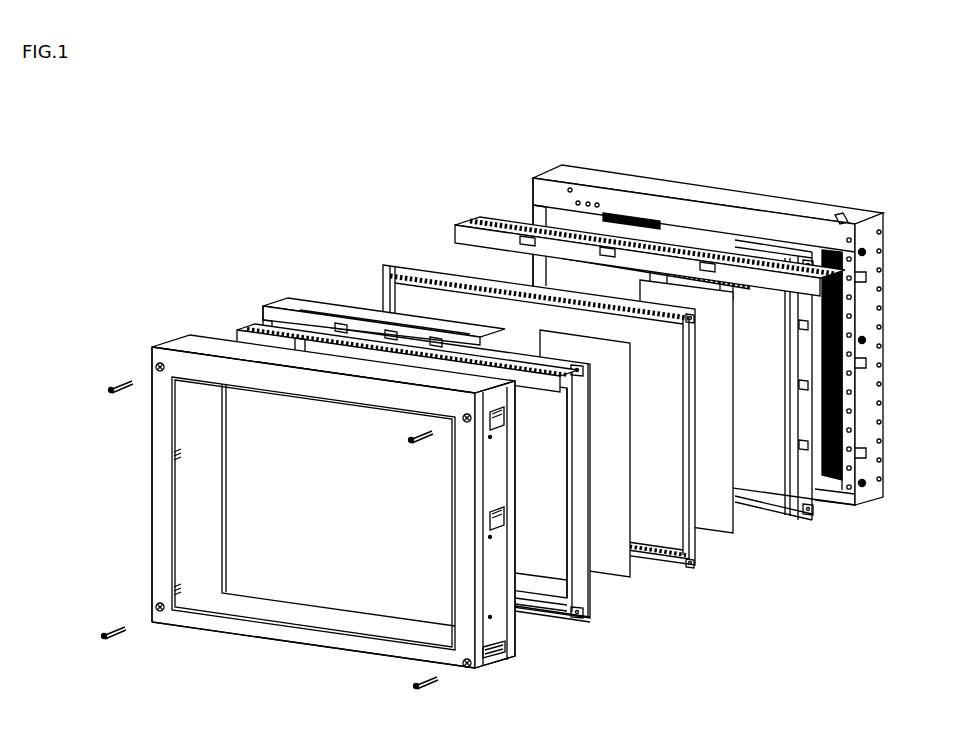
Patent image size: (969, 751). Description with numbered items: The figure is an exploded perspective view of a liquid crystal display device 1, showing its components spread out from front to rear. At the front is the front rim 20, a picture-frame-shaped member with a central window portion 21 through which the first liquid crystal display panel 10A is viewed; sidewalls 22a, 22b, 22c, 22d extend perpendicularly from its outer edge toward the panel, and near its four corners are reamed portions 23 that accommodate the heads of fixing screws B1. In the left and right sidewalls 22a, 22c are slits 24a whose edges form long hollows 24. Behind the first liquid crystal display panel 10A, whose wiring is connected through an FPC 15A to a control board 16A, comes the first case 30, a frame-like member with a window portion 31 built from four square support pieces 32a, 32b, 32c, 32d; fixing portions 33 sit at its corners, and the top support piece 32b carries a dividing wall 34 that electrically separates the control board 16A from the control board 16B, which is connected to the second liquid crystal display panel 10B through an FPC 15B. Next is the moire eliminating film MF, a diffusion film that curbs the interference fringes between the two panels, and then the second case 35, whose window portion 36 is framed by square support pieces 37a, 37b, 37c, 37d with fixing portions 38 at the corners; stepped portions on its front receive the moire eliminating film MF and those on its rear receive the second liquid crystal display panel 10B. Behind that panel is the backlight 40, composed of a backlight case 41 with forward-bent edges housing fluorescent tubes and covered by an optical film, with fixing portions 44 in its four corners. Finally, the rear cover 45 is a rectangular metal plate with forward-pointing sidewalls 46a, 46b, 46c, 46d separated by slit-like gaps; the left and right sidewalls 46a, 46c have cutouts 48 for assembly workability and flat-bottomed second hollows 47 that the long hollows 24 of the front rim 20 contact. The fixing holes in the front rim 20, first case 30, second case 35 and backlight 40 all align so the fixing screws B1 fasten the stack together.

The display device 1 is at (128, 121).
The first liquid crystal display panel 10A is at (337, 509).
The second liquid crystal display panel 10B is at (713, 429).
The FPC 15A is at (380, 338).
The FPC 15B is at (629, 236).
The control board 16A is at (258, 328).
The control board 16B is at (498, 222).
The front rim 20 is at (337, 509).
The window portion 21 is at (197, 526).
The sidewall 22a is at (495, 625).
The sidewall 22b is at (187, 341).
The sidewall 22c is at (152, 456).
The sidewall 22d is at (191, 633).
The reamed portion 23 is at (156, 367).
The long hollow 24 is at (509, 551).
The slit 24a is at (506, 656).
The first case 30 is at (442, 459).
The window portion 31 is at (531, 545).
The square support piece 32a is at (592, 600).
The top support piece 32b is at (291, 300).
The square support piece 32c is at (257, 327).
The square support piece 32d is at (572, 620).
The fixing portion 33 is at (578, 620).
The dividing wall 34 is at (333, 306).
The second case 35 is at (550, 418).
The window portion 36 is at (698, 460).
The square support piece 37a is at (700, 420).
The square support piece 37b is at (405, 266).
The square support piece 37c is at (381, 296).
The square support piece 37d is at (654, 560).
The fixing portion 38 is at (692, 571).
The backlight 40 is at (711, 406).
The backlight case 41 is at (782, 516).
The fixing portion 44 is at (824, 521).
The rear cover 45 is at (711, 342).
The sidewall 46a is at (876, 410).
The sidewall 46b is at (672, 186).
The sidewall 46c is at (532, 188).
The sidewall 46d is at (840, 502).
The second hollow 47 is at (866, 252).
The cutout 48 is at (858, 278).
The moire eliminating film MF is at (613, 578).
The fixing screw B1 is at (112, 384).